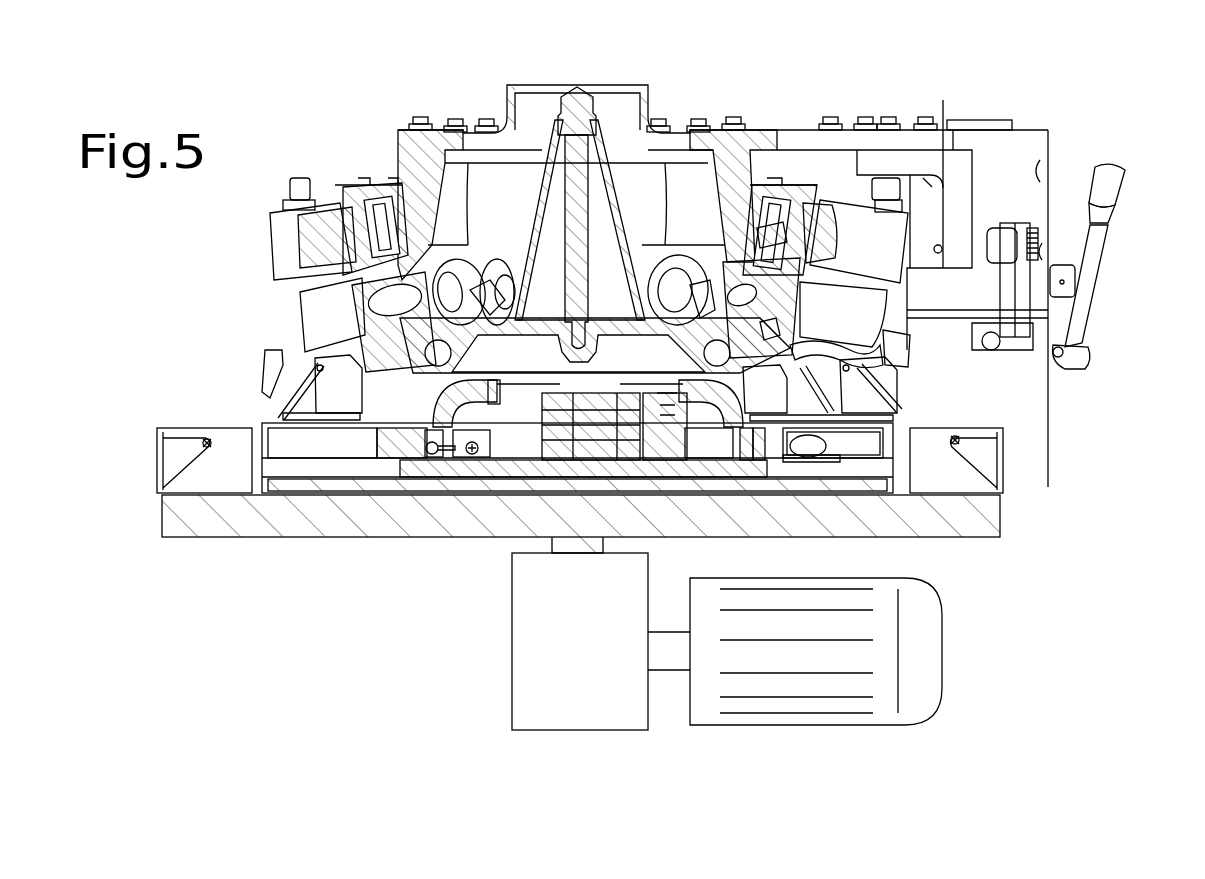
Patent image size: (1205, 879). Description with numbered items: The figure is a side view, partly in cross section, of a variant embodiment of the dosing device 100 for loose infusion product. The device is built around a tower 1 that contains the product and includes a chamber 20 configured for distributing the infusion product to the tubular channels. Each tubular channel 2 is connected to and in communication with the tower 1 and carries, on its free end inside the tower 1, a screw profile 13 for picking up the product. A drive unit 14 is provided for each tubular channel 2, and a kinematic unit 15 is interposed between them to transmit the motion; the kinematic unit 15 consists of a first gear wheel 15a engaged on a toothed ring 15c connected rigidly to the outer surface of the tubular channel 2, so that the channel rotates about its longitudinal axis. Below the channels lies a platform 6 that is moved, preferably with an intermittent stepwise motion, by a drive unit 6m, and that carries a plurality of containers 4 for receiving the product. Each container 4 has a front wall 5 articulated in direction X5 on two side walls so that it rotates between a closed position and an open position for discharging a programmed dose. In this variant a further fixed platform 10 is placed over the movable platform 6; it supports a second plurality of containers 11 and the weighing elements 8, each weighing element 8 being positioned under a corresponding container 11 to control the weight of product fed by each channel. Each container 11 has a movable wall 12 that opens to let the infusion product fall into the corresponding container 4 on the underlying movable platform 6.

The dosing device 100 is at (886, 87).
The tower 1 is at (748, 132).
The tubular channel 2 is at (317, 307).
The container 4 is at (232, 450).
The wall 5 is at (170, 453).
The platform 6 is at (358, 513).
The drive unit 6m is at (842, 688).
The weighing element 8 is at (293, 445).
The fixed platform 10 is at (810, 477).
The container of the second plurality 11 is at (327, 387).
The wall 12 is at (283, 390).
The screw profile 13 is at (470, 163).
The drive unit 14 is at (277, 233).
The kinematic unit 15 is at (400, 242).
The first gear wheel 15a is at (765, 235).
The toothed ring 15c is at (767, 330).
The chamber 20 is at (633, 180).
The direction X5 is at (207, 443).